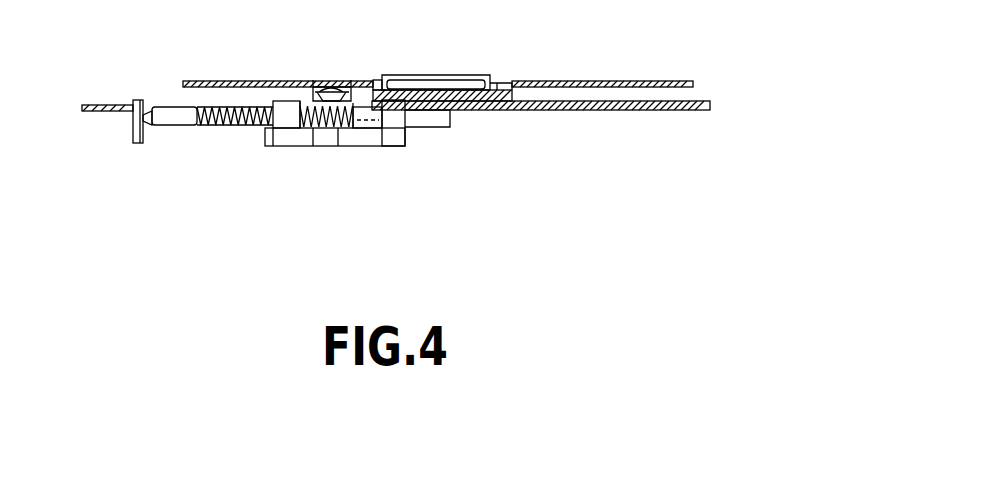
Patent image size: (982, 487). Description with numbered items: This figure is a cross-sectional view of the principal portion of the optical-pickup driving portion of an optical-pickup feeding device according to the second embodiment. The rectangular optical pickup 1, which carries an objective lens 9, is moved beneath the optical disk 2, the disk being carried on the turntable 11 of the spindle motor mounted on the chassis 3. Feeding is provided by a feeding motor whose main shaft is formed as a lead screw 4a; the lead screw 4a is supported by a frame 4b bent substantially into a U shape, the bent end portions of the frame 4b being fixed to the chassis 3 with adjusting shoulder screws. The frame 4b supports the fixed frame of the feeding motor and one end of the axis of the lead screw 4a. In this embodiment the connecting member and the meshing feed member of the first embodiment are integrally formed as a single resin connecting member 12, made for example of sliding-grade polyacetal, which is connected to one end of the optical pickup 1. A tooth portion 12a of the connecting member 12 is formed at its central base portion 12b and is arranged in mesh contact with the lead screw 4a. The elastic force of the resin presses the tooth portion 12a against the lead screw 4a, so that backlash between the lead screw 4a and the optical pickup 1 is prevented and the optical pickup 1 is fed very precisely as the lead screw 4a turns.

The optical pickup 1 is at (280, 143).
The optical disk 2 is at (208, 80).
The chassis 3 is at (97, 112).
The lead screw 4a is at (220, 126).
The frame 4b is at (138, 143).
The objective lens 9 is at (310, 80).
The turntable 11 is at (473, 112).
The connecting member 12 is at (393, 120).
The tooth portion 12a is at (353, 80).
The central base portion 12b is at (313, 128).